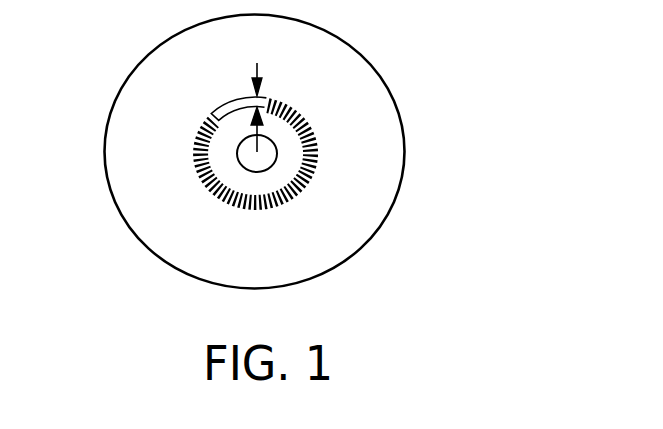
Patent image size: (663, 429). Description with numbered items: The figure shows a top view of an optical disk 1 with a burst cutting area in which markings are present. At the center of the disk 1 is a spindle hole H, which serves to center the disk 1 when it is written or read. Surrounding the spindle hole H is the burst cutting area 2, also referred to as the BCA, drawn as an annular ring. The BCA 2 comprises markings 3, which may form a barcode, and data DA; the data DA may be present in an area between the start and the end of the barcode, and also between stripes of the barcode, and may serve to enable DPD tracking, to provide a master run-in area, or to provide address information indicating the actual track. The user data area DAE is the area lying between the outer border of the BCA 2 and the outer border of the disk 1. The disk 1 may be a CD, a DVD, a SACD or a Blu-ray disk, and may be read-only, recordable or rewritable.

The optical disk 1 is at (362, 53).
The burst cutting area 2 is at (257, 63).
The markings 3 is at (199, 198).
The spindle hole H is at (277, 153).
The data DA is at (232, 107).
The user data area DAE is at (362, 135).